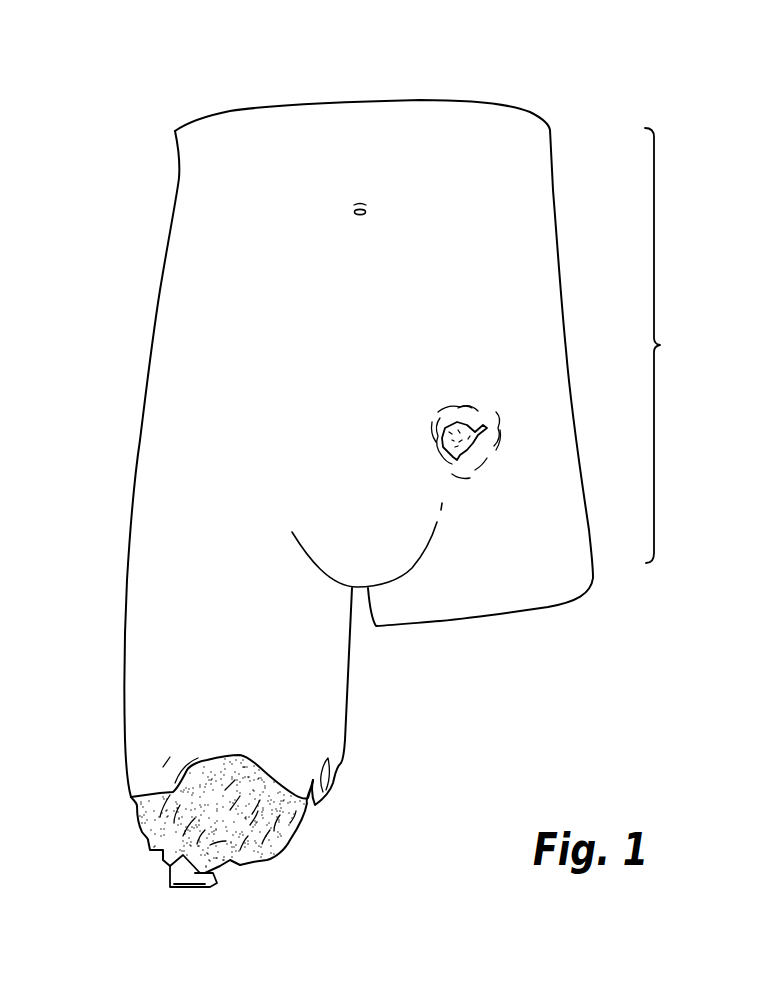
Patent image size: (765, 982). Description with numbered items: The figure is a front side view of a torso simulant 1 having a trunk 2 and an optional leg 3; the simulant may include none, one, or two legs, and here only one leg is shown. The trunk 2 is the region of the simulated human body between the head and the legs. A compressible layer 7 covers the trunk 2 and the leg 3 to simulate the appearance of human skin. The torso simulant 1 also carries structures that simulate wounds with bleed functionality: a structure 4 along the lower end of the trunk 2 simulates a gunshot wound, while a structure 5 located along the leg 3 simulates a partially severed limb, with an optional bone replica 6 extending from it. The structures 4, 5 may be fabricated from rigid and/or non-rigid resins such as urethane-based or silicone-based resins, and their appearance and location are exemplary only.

The torso simulant 1 is at (166, 108).
The trunk 2 is at (666, 345).
The leg 3 is at (162, 647).
The structure 4 is at (462, 447).
The structure 5 is at (273, 857).
The bone replica 6 is at (170, 873).
The compressible layer 7 is at (198, 358).